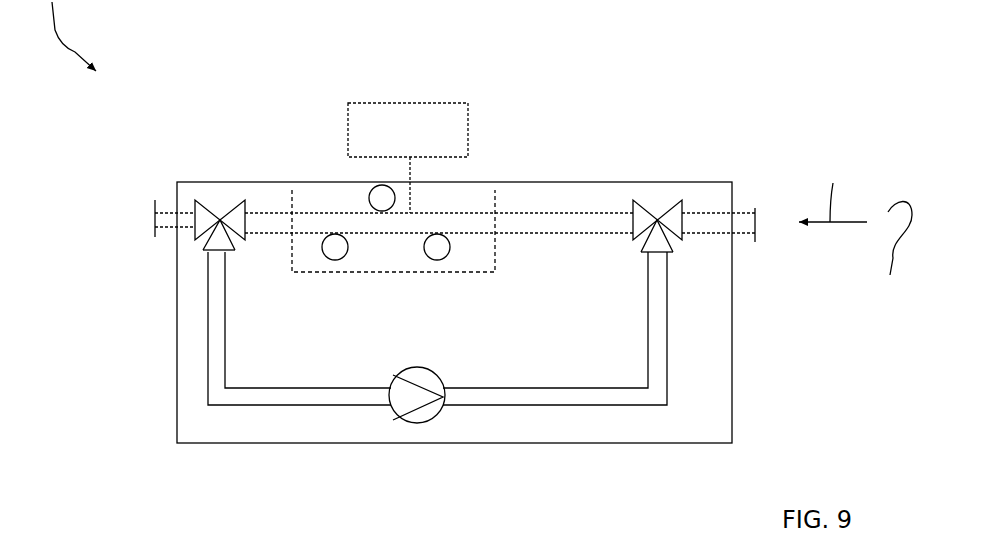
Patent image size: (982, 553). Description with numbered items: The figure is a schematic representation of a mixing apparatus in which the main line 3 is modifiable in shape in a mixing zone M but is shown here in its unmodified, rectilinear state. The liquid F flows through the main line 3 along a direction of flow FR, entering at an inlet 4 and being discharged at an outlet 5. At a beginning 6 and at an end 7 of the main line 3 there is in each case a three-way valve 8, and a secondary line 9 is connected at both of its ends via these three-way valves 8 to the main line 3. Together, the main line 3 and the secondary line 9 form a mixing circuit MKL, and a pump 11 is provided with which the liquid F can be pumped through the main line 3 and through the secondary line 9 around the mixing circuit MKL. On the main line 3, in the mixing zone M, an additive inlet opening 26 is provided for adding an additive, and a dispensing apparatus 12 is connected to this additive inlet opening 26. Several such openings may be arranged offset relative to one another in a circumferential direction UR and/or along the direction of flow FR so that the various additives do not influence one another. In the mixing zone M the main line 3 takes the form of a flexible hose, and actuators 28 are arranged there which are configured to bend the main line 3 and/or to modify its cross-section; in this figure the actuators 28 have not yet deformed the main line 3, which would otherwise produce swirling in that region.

The main line 3 is at (600, 237).
The inlet 4 is at (758, 211).
The outlet 5 is at (152, 215).
The beginning 6 is at (627, 246).
The end 7 is at (253, 247).
The three-way valve 8 is at (199, 243).
The secondary line 9 is at (213, 362).
The pump 11 is at (418, 424).
The dispensing apparatus 12 is at (417, 123).
The additive inlet opening 26 is at (421, 207).
The actuators 28 is at (378, 212).
The mixing zone M is at (497, 200).
The liquid F is at (552, 237).
The mixing circuit MKL is at (697, 329).
The direction of flow FR is at (833, 188).
The circumferential direction UR is at (892, 255).